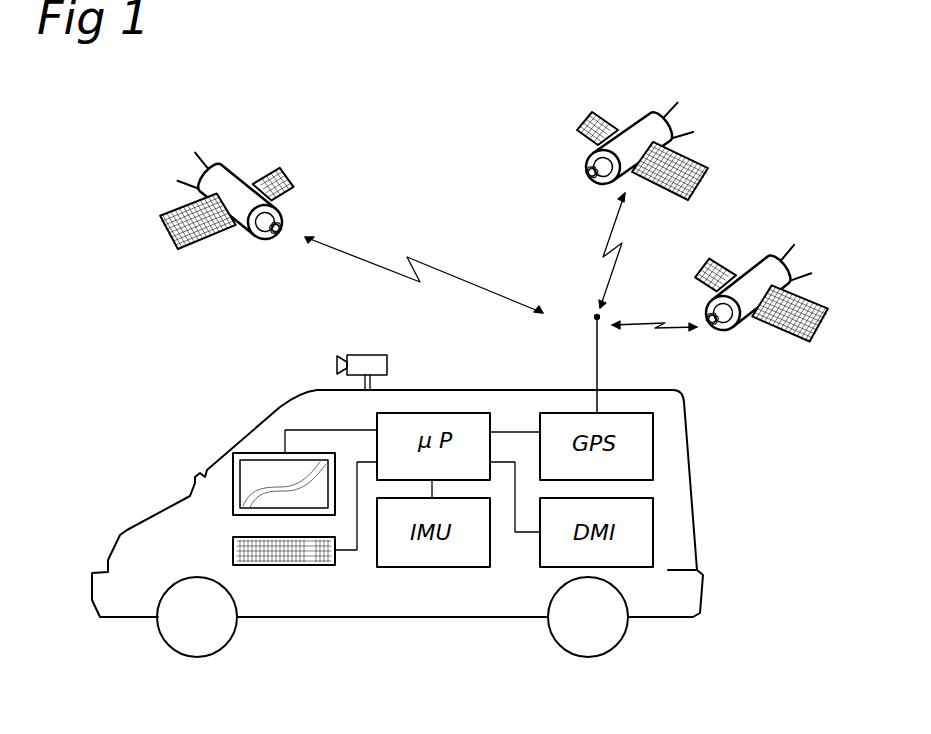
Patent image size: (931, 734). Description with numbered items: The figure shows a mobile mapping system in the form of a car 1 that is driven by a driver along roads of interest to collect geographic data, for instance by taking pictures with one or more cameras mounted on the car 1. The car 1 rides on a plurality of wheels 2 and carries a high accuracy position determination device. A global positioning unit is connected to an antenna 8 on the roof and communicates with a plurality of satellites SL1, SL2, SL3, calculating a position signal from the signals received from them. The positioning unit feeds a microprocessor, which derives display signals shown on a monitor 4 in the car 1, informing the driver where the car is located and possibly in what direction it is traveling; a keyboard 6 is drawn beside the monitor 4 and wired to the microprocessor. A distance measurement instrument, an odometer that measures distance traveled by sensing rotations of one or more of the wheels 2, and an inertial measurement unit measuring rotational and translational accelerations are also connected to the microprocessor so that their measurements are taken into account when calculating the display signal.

The car 1 is at (155, 530).
The wheels 2 is at (187, 630).
The monitor 4 is at (258, 472).
The keyboard 6 is at (233, 548).
The antenna 8 is at (595, 362).
The satellite SL1 is at (226, 206).
The satellite SL2 is at (657, 154).
The satellite SL3 is at (761, 294).